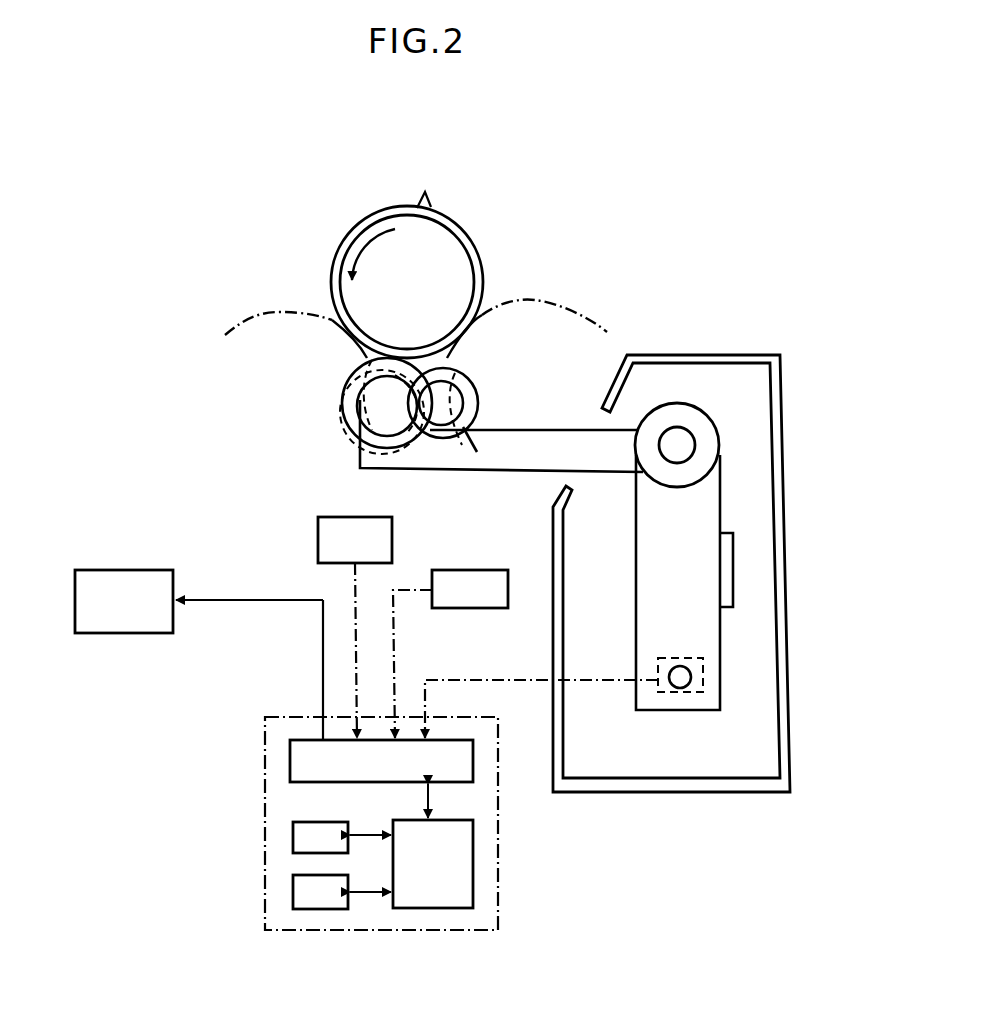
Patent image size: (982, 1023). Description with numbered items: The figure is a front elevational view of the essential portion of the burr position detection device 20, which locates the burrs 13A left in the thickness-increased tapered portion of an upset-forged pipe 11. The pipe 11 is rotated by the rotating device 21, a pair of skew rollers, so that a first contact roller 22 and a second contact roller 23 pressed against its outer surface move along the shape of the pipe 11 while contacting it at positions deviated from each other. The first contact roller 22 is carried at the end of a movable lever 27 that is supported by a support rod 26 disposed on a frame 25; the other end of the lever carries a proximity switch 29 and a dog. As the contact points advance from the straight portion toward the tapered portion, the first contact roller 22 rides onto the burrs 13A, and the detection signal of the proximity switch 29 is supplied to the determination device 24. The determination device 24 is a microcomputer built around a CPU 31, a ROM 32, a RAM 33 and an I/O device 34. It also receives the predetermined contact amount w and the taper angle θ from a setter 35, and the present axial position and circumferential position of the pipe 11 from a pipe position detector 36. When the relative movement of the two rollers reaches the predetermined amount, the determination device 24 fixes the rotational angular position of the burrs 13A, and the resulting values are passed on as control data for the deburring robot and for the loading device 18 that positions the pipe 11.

The pipe 11 is at (366, 208).
The burrs 13A is at (430, 201).
The loading device 18 is at (120, 570).
The burr position detection device 20 is at (760, 243).
The rotating device 21 is at (267, 312).
The first contact roller 22 is at (353, 369).
The second contact roller 23 is at (480, 368).
The determination device 24 is at (264, 862).
The frame 25 is at (787, 517).
The support rod 26 is at (685, 445).
The movable lever 27 is at (502, 462).
The proximity switch 29 is at (683, 683).
The CPU 31 is at (473, 888).
The ROM 32 is at (293, 835).
The RAM 33 is at (293, 890).
The I/O device 34 is at (290, 760).
The setter 35 is at (318, 542).
The pipe position detector 36 is at (480, 608).